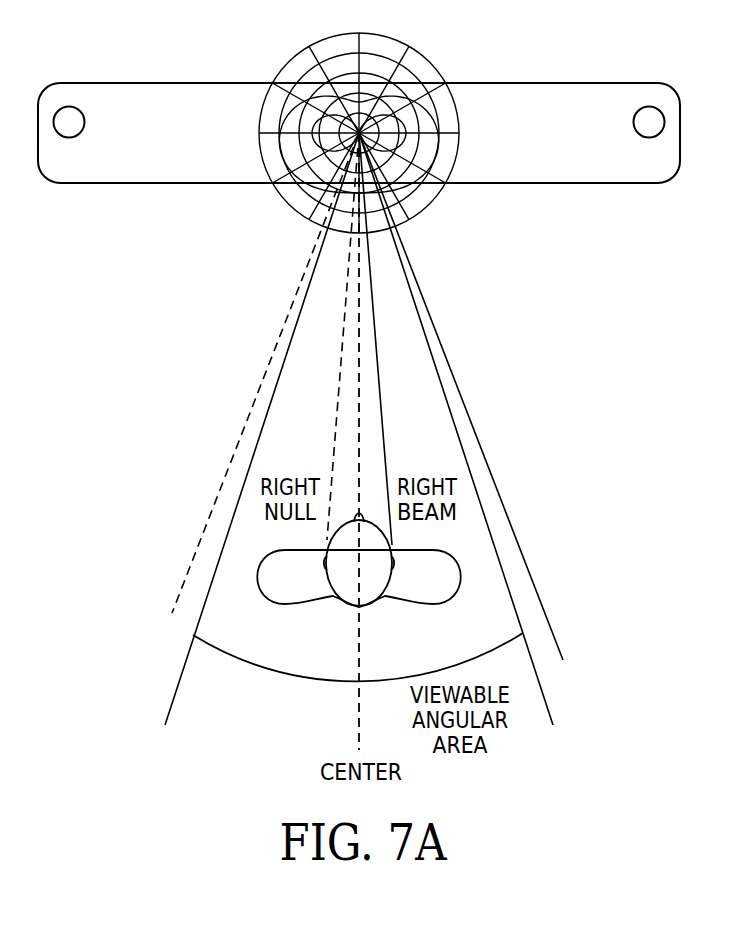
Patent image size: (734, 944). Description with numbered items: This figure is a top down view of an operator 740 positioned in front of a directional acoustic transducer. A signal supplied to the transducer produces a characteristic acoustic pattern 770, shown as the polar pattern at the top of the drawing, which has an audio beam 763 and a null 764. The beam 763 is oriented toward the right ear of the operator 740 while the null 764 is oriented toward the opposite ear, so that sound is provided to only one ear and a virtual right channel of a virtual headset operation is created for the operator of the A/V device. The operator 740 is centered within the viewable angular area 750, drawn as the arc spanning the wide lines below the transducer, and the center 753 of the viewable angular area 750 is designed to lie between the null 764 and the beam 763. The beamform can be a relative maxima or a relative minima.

The characteristic acoustic pattern 770 is at (297, 76).
The null 764 is at (286, 406).
The beam 763 is at (426, 378).
The center 753 is at (361, 713).
The operator 740 is at (300, 605).
The viewable angular area 750 is at (462, 660).